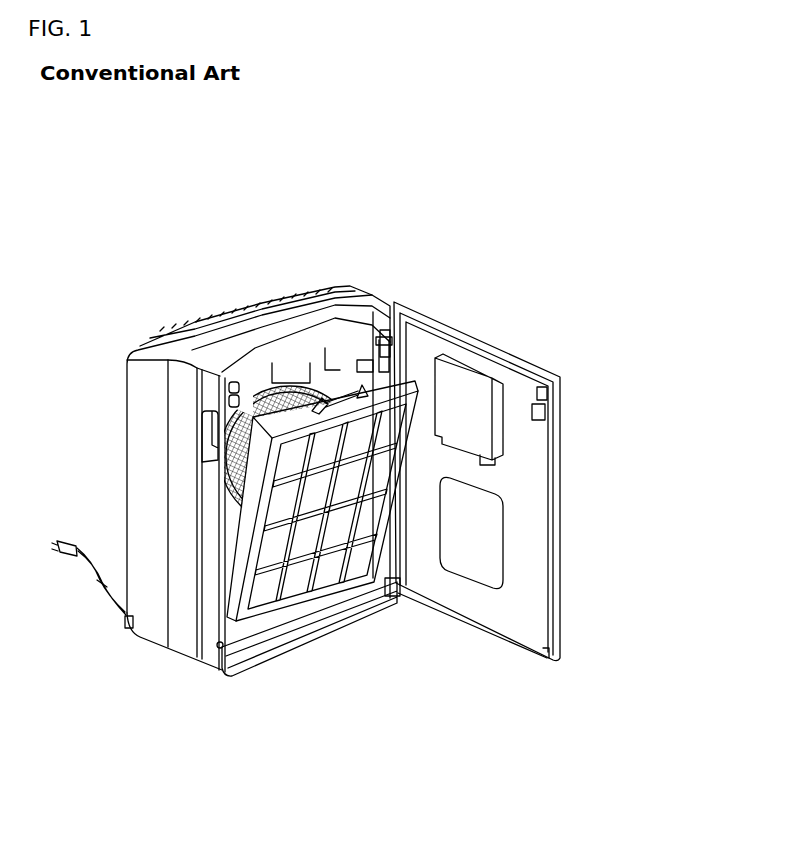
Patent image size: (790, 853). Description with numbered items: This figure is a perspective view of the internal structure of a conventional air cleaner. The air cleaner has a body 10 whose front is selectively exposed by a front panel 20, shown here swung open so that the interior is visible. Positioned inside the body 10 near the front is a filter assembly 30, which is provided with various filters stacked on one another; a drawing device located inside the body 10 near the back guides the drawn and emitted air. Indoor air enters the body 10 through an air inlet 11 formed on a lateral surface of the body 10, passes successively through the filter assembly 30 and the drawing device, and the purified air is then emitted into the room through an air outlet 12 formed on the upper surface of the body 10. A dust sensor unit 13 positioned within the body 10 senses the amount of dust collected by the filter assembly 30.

The body 10 is at (376, 280).
The air inlet 11 is at (212, 457).
The air outlet 12 is at (249, 306).
The dust sensor unit 13 is at (230, 382).
The front panel 20 is at (568, 328).
The filter assembly 30 is at (297, 612).